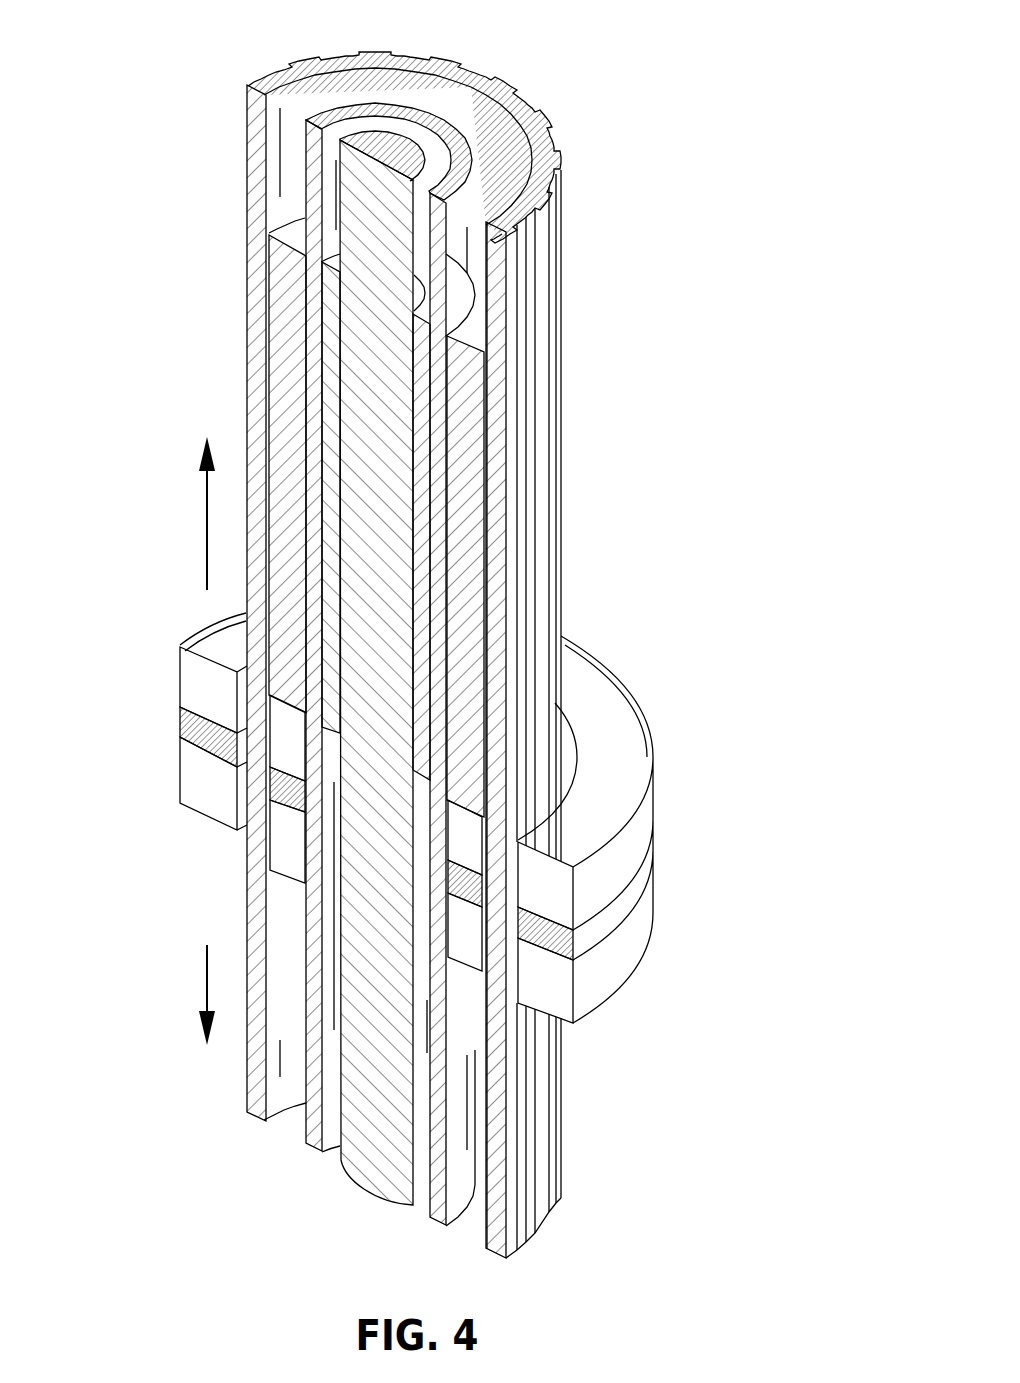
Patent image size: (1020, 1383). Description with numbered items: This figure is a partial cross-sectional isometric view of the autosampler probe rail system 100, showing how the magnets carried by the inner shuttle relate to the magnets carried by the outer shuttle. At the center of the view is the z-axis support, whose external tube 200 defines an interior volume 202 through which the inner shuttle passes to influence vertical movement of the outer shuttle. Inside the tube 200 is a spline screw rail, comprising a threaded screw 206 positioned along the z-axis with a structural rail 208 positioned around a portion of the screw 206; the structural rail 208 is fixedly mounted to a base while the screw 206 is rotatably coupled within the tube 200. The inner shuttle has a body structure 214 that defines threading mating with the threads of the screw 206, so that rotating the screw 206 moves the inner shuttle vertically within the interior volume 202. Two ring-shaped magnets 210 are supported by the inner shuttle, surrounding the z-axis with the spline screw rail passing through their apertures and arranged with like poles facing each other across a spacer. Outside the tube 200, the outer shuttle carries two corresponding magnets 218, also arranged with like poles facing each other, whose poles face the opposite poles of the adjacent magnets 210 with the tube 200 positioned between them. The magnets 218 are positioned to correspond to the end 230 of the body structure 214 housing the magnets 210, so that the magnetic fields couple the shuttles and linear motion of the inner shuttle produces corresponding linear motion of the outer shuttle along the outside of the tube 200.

The autosampler probe rail system 100 is at (676, 124).
The external tube 200 is at (500, 323).
The interior volume 202 is at (291, 106).
The threaded screw 206 is at (367, 203).
The structural rail 208 is at (441, 256).
The magnets 210 is at (272, 843).
The body structure 214 is at (476, 521).
The magnets 218 is at (188, 668).
The end 230 is at (273, 863).